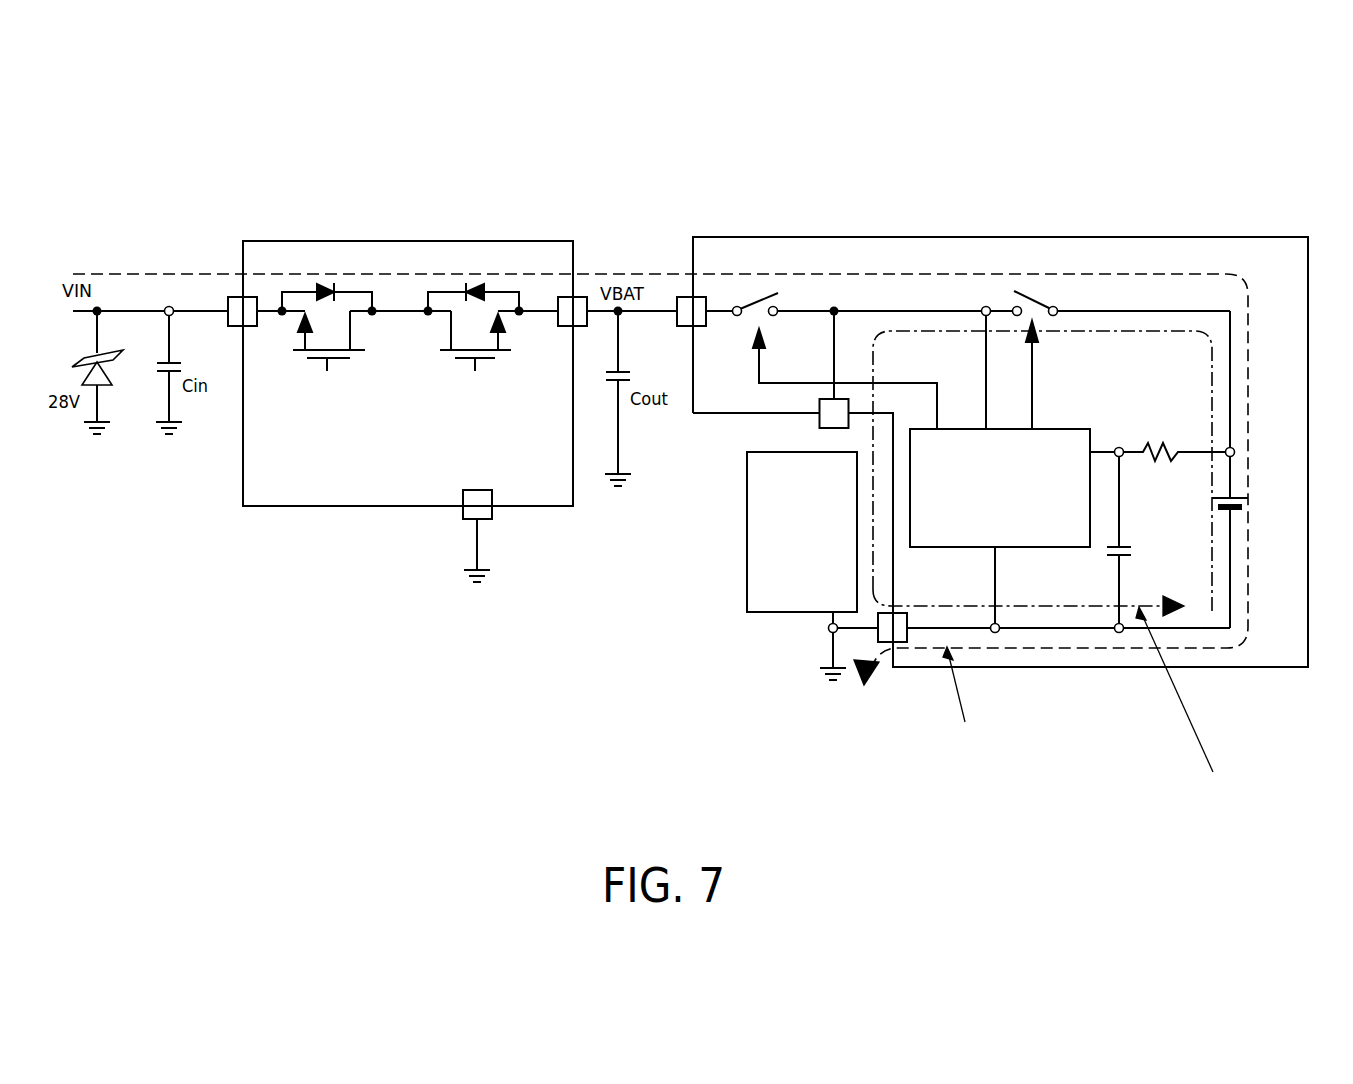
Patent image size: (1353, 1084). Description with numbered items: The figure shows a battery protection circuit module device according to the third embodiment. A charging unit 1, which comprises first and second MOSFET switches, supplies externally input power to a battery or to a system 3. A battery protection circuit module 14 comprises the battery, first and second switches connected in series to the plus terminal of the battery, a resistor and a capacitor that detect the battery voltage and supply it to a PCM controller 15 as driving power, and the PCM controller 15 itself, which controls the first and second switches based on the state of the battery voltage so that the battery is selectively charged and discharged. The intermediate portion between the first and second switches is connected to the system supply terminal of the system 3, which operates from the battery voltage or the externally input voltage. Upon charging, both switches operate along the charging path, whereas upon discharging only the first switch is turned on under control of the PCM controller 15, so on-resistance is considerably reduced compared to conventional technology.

The charging unit 1 is at (395, 260).
The battery protection circuit module 14 is at (700, 451).
The PCM controller 15 is at (957, 448).
The system 3 is at (778, 598).